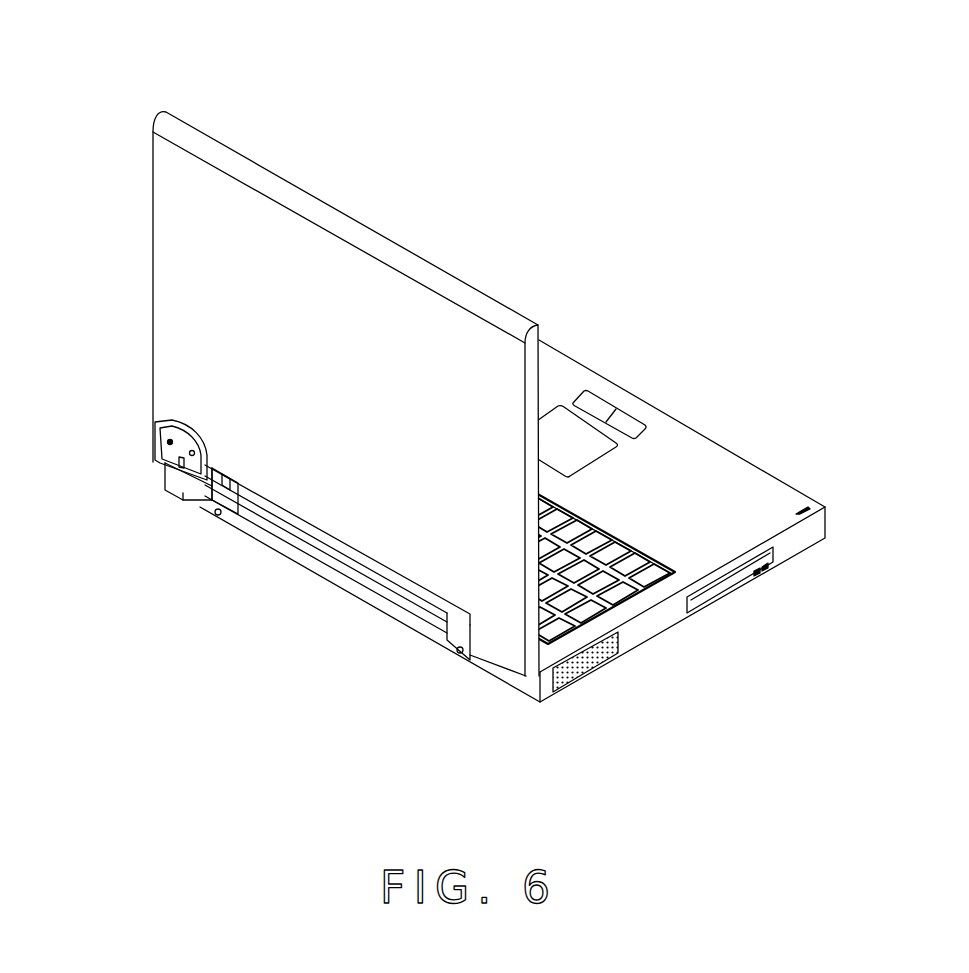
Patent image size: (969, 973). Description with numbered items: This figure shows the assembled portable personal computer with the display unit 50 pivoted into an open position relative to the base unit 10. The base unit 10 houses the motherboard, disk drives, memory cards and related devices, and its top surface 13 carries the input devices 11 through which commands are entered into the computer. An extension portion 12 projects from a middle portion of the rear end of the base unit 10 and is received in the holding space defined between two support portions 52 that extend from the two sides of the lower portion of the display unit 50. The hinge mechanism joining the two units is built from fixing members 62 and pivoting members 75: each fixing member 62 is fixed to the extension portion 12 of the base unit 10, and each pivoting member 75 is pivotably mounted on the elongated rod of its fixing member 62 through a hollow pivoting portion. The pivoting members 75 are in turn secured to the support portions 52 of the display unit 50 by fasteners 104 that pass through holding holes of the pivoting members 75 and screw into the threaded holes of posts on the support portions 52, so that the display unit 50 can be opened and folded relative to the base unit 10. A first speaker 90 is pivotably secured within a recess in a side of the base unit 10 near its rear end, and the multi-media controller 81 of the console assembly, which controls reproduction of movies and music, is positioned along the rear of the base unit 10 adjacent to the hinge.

The display unit 50 is at (275, 228).
The base unit 10 is at (797, 542).
The top surface 13 is at (765, 498).
The input devices 11 is at (650, 568).
The extension portion 12 is at (352, 588).
The first speaker 90 is at (583, 677).
The support portion 52 is at (155, 423).
The fastener 104 is at (170, 442).
The pivoting member 75 is at (183, 483).
The fixing member 62 is at (212, 495).
The multi-media controller 81 is at (297, 533).